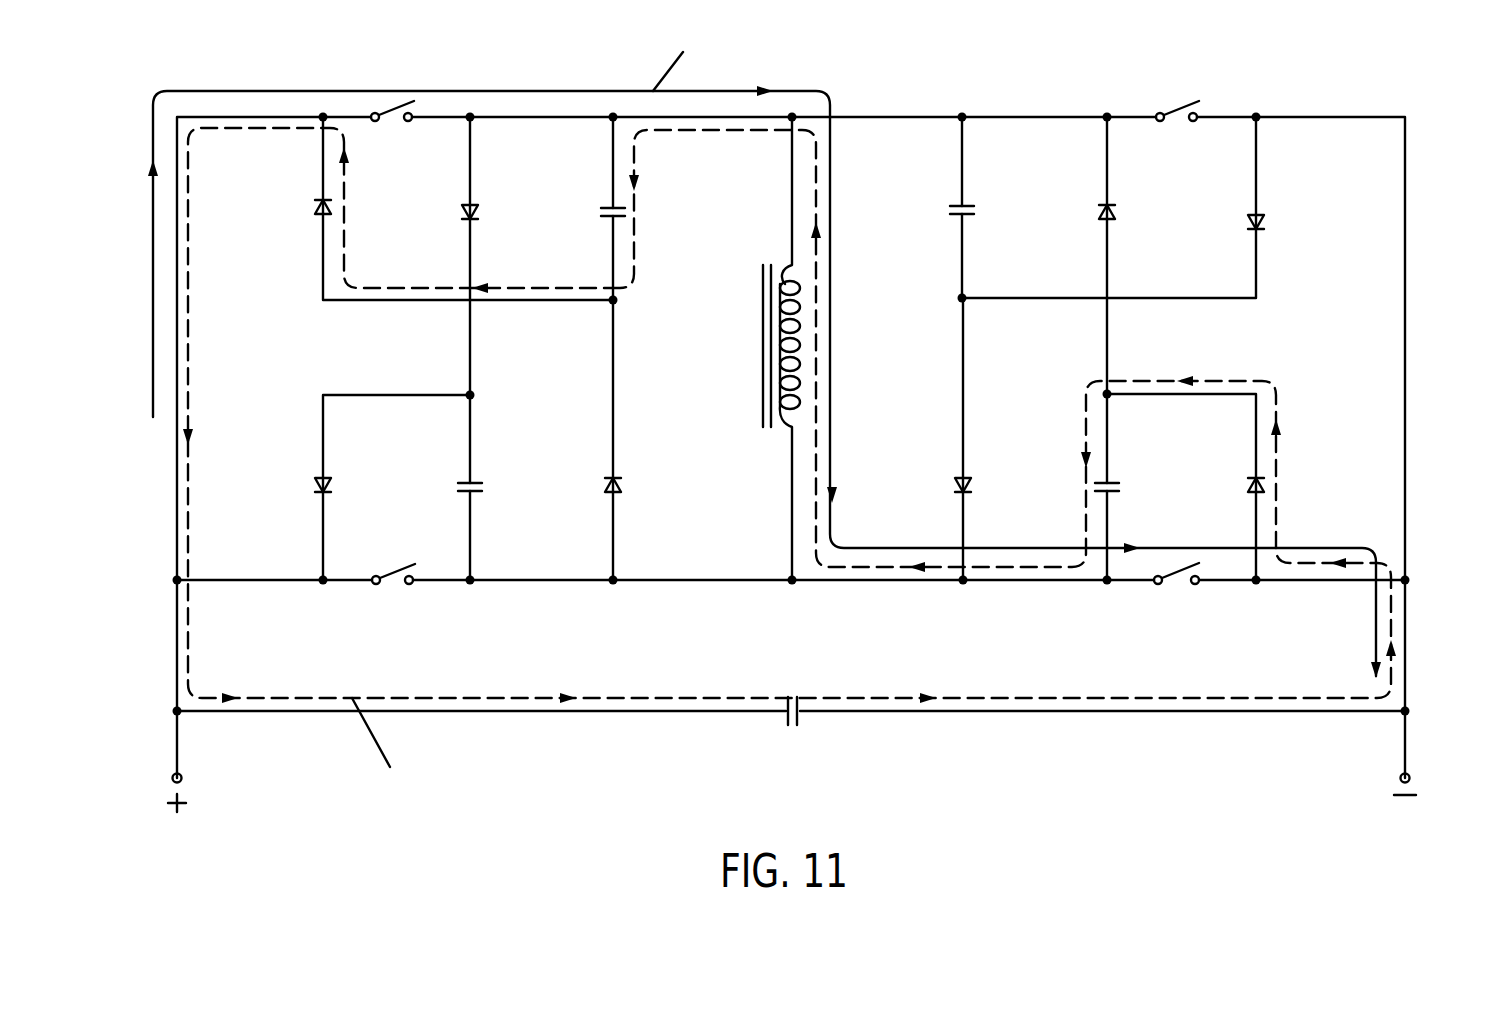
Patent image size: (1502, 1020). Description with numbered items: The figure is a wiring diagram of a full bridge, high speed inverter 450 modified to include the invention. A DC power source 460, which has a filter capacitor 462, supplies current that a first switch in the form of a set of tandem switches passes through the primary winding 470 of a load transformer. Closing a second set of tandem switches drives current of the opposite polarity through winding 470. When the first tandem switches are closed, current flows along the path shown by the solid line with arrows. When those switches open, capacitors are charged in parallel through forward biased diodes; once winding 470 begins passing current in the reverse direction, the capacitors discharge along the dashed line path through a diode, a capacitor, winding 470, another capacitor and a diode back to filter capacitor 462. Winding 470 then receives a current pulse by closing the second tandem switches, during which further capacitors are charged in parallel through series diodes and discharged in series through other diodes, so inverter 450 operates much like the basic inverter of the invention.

The full bridge inverter 450 is at (823, 426).
The DC power source 460 is at (1443, 753).
The filter capacitor 462 is at (794, 730).
The primary winding 470 is at (785, 427).